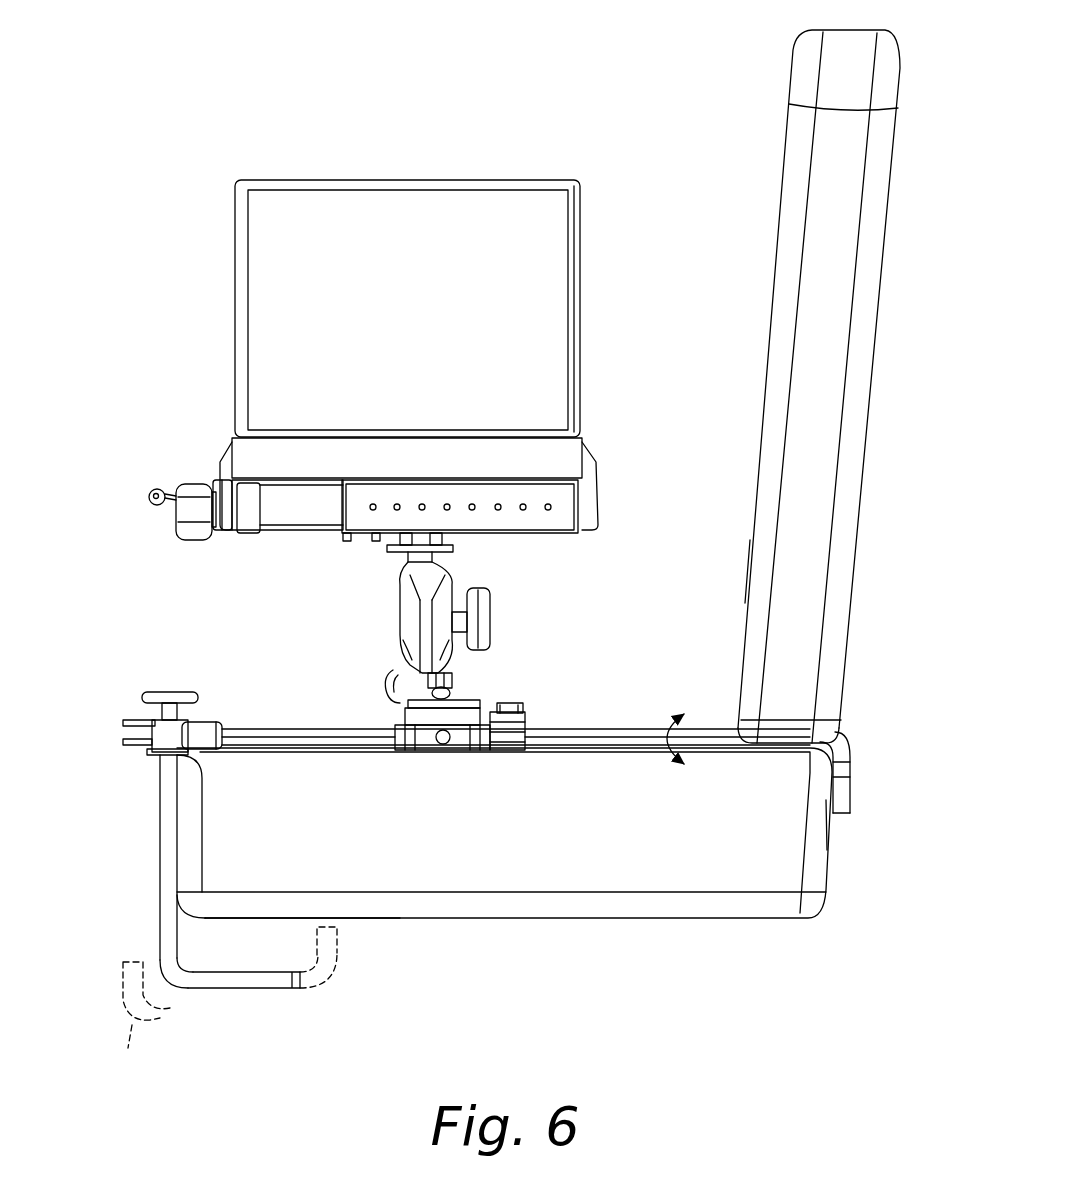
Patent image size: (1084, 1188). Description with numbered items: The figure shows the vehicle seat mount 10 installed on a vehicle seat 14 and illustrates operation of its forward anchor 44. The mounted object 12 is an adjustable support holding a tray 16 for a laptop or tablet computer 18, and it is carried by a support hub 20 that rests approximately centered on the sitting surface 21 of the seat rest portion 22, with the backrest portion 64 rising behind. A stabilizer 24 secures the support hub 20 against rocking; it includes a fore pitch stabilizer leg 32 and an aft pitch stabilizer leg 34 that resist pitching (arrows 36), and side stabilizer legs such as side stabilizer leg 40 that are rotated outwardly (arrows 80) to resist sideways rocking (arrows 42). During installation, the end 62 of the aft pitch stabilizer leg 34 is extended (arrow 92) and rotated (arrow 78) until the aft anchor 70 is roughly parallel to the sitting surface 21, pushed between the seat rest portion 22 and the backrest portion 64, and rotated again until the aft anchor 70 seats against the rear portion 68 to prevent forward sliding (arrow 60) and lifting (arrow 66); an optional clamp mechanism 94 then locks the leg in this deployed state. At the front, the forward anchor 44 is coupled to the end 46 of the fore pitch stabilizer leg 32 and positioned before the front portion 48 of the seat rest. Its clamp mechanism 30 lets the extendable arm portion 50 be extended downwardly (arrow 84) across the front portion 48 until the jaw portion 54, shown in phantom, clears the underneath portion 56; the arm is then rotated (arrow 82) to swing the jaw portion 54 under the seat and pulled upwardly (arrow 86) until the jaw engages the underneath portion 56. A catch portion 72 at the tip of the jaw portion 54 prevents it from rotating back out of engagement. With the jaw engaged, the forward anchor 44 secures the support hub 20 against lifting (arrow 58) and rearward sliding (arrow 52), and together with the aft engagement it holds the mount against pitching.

The vehicle seat mount 10 is at (170, 583).
The object 12 is at (400, 640).
The vehicle seat 14 is at (782, 222).
The tray 16 is at (242, 507).
The laptop or tablet computer 18 is at (245, 432).
The support hub 20 is at (484, 718).
The sitting surface 21 is at (312, 735).
The seat rest portion 22 is at (698, 905).
The stabilizer 24 is at (446, 746).
The clamp mechanism 30 is at (142, 698).
The fore pitch stabilizer leg 32 is at (274, 733).
The aft pitch stabilizer leg 34 is at (614, 730).
The pitching 36 is at (115, 770).
The side stabilizer leg 40 is at (437, 746).
The yaw or sideways rocking 42 is at (352, 752).
The forward anchor 44 is at (208, 694).
The end of fore pitch stabilizer leg 46 is at (236, 733).
The front portion 48 is at (173, 858).
The extendable arm portion 50 is at (160, 873).
The translation direction 52 is at (150, 793).
The jaw portion 54 is at (268, 992).
The underneath portion 56 is at (260, 918).
The lifting 58 is at (215, 862).
The sliding forwardly 60 is at (738, 652).
The end of aft pitch stabilizer leg 62 is at (845, 728).
The backrest portion 64 is at (745, 603).
The lifting 66 is at (847, 878).
The rear portion 68 is at (827, 850).
The aft anchor 70 is at (851, 812).
The catch portion 72 is at (388, 680).
The rotation 78 is at (667, 737).
The outward rotation 80 is at (392, 762).
The rotation 82 is at (205, 938).
The downward extension 84 is at (172, 967).
The upward lifting 86 is at (172, 705).
The extension 92 is at (683, 762).
The clamp mechanism 94 is at (522, 707).